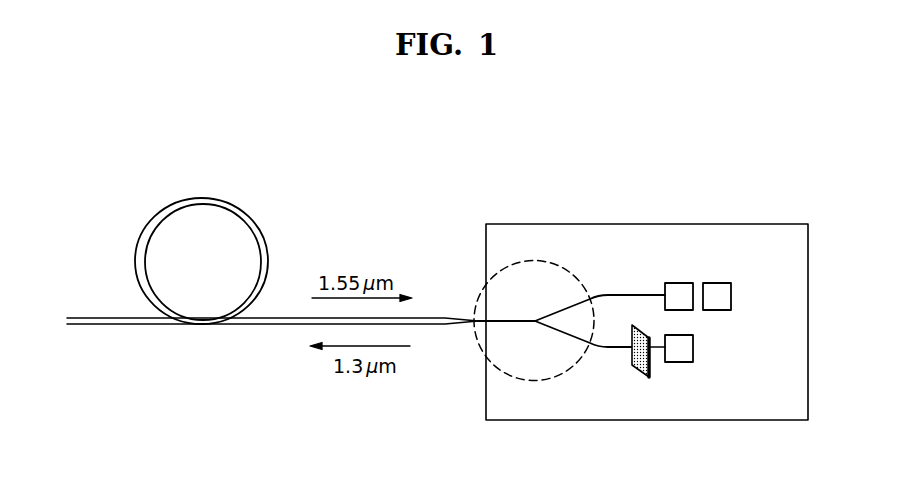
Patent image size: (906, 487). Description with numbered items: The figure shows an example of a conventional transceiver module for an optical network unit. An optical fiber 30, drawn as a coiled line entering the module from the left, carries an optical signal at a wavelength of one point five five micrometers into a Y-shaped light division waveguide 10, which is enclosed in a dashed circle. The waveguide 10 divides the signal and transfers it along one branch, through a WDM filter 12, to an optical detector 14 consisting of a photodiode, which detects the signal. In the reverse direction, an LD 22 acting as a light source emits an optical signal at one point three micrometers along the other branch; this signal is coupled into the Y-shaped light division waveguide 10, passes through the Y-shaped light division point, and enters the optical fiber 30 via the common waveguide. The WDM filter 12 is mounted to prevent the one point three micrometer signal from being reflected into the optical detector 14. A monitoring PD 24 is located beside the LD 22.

The Y-shaped light division waveguide 10 is at (533, 380).
The WDM filter 12 is at (639, 374).
The optical detector 14 is at (678, 362).
The LD 22 is at (680, 282).
The monitoring PD 24 is at (718, 282).
The optical fiber 30 is at (203, 198).